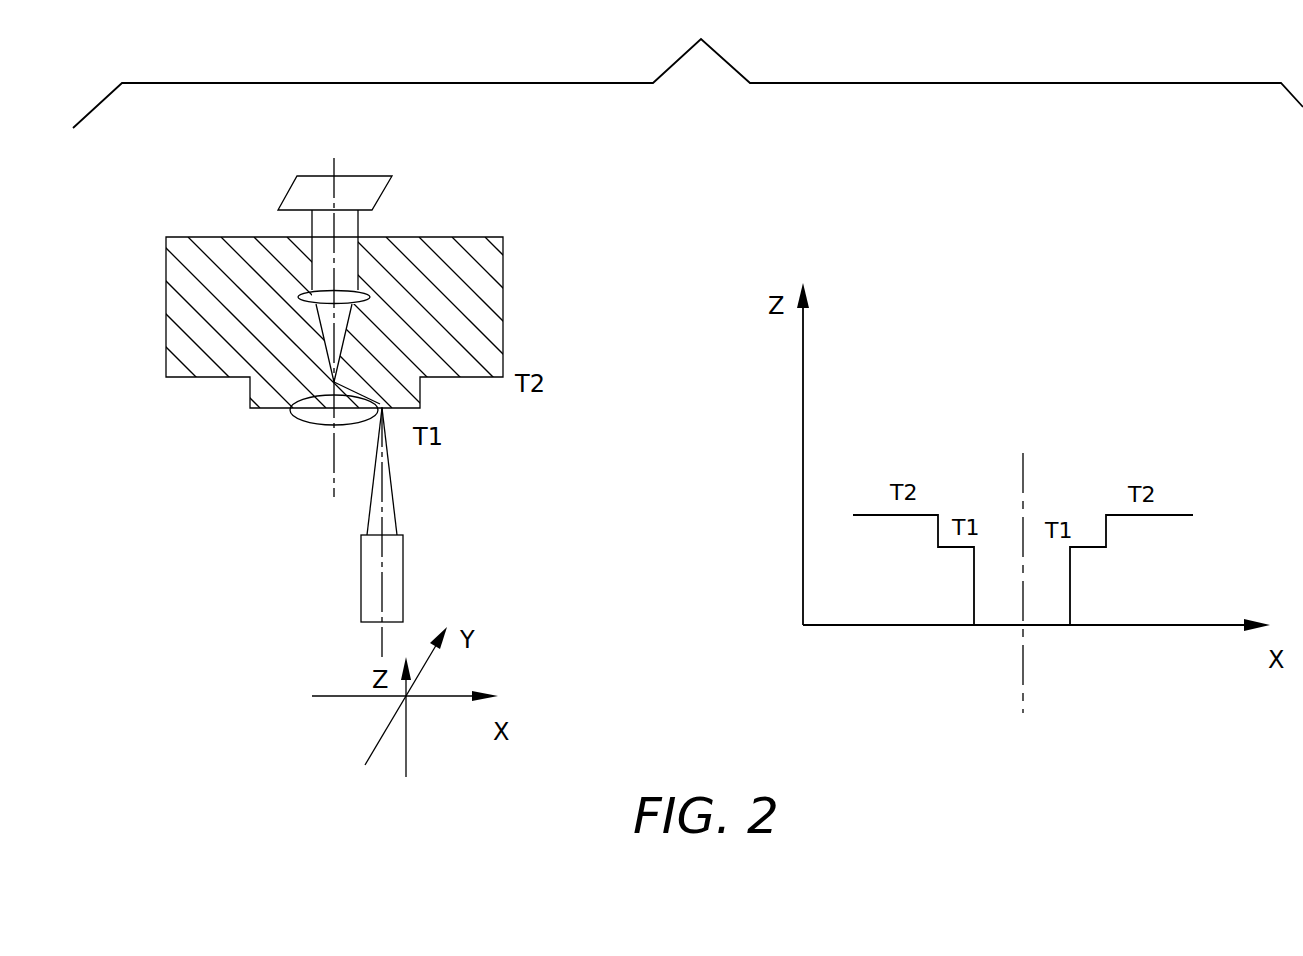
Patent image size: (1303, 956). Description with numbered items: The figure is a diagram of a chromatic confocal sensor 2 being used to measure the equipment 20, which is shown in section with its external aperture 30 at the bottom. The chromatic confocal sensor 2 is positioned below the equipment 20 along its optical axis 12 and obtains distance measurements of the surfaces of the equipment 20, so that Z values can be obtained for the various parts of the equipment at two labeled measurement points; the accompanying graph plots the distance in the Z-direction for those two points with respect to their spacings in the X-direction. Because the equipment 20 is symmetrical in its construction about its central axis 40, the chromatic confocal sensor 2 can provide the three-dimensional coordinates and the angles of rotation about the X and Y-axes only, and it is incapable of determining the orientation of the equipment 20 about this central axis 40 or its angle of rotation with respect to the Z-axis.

The equipment 20 is at (503, 292).
The external aperture 30 is at (292, 410).
The central axis 40 is at (334, 478).
The chromatic confocal sensor 2 is at (403, 548).
The optical axis 12 is at (381, 645).